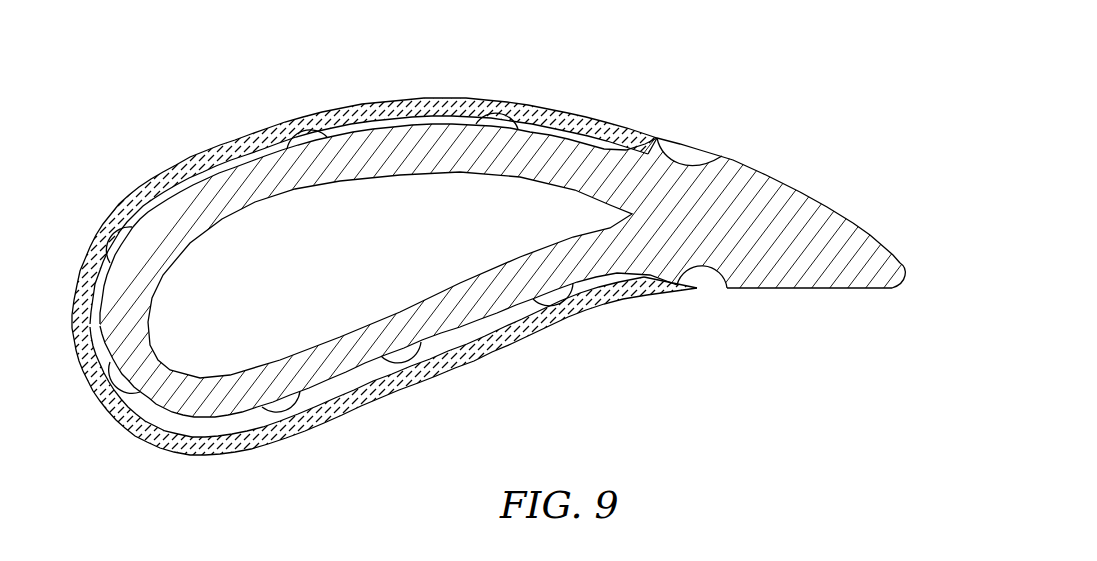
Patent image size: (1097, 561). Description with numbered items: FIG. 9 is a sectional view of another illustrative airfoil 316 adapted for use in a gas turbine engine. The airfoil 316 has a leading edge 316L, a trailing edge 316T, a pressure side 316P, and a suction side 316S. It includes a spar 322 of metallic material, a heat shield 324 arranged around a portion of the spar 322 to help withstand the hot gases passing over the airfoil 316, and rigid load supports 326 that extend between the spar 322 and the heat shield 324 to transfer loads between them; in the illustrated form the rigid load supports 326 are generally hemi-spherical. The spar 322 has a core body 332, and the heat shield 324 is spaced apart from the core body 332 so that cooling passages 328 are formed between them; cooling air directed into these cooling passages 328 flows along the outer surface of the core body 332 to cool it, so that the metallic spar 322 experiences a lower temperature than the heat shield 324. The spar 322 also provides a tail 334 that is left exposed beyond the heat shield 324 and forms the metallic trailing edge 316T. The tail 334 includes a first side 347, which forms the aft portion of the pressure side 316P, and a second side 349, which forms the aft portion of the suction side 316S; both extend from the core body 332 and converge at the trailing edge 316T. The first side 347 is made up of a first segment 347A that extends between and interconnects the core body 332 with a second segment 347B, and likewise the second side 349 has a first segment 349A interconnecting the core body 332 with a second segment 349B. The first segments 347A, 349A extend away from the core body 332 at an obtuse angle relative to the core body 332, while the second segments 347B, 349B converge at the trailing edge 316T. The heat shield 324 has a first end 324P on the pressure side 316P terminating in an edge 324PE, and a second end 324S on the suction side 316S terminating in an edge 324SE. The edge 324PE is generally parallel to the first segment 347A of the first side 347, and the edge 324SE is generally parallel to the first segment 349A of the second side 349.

The airfoil 316 is at (138, 82).
The leading edge 316L is at (62, 322).
The trailing edge 316T is at (912, 277).
The suction side 316S is at (460, 92).
The pressure side 316P is at (493, 356).
The spar 322 is at (357, 150).
The heat shield 324 is at (200, 457).
The second end 324S is at (645, 131).
The first end 324P is at (574, 316).
The edge 324SE is at (653, 136).
The edge 324PE is at (664, 288).
The rigid load support 326 is at (296, 143).
The cooling passage 328 is at (202, 178).
The core body 332 is at (338, 352).
The tail 334 is at (814, 198).
The first side 347 is at (730, 292).
The first segment 347A is at (685, 272).
The second segment 347B is at (827, 292).
The second side 349 is at (747, 156).
The first segment 349A is at (672, 149).
The second segment 349B is at (834, 208).